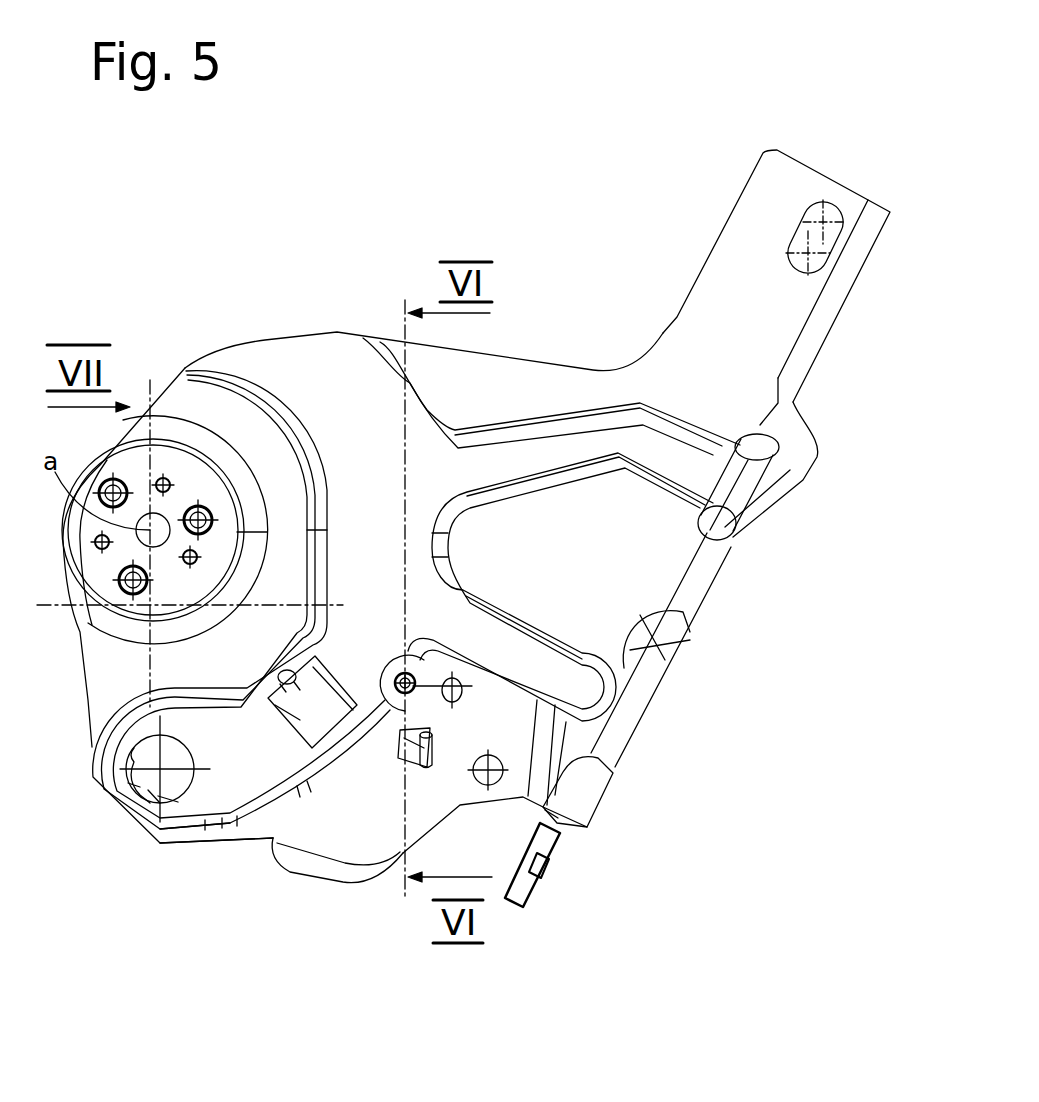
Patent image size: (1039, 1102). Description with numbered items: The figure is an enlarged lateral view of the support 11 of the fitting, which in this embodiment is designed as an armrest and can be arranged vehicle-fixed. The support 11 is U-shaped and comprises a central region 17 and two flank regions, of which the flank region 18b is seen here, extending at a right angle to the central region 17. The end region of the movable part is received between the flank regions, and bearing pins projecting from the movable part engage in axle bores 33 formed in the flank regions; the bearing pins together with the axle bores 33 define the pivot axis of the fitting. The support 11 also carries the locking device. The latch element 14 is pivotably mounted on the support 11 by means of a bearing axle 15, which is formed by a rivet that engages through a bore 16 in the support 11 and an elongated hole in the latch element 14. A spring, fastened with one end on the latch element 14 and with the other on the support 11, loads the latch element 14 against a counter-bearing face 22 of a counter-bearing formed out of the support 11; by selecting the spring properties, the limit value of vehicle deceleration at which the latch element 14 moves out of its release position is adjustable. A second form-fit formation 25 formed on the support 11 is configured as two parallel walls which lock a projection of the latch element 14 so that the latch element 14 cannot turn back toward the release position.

The support 11 is at (780, 197).
The axle bore 33 is at (168, 510).
The bearing axle 15 is at (400, 675).
The bore 16 is at (400, 716).
The second form-fit formation 25 is at (331, 704).
The counter-bearing face 22 is at (400, 770).
The central region 17 is at (740, 568).
The latch element 14 is at (317, 862).
The flank region 18b is at (288, 819).